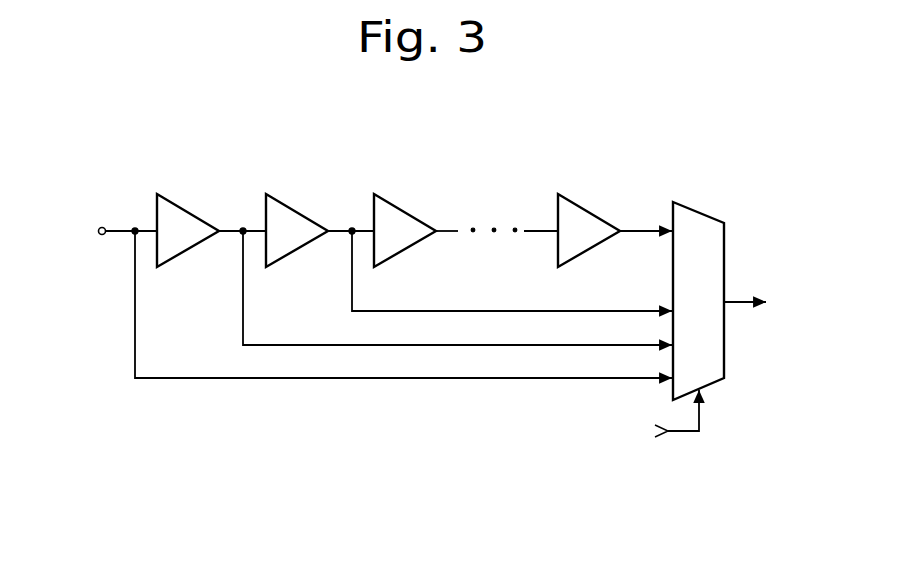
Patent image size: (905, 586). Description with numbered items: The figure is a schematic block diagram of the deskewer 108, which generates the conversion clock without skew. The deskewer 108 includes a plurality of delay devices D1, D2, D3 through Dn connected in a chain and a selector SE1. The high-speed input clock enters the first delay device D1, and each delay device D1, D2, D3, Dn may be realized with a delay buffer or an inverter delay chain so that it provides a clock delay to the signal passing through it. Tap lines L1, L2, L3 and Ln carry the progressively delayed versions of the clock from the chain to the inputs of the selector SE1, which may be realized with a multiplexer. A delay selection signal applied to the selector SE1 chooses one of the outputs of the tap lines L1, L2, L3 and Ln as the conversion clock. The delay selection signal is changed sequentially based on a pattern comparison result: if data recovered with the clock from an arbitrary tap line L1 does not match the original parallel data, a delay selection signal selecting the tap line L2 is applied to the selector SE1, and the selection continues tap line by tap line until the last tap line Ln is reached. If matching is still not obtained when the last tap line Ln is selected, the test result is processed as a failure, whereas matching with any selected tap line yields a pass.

The deskewer 108 is at (654, 128).
The delay device D1 is at (190, 202).
The delay device D2 is at (300, 202).
The delay device D3 is at (410, 202).
The delay device Dn is at (593, 202).
The tap line L1 is at (135, 288).
The tap line L2 is at (243, 288).
The tap line L3 is at (352, 288).
The tap line Ln is at (640, 233).
The selector SE1 is at (697, 208).